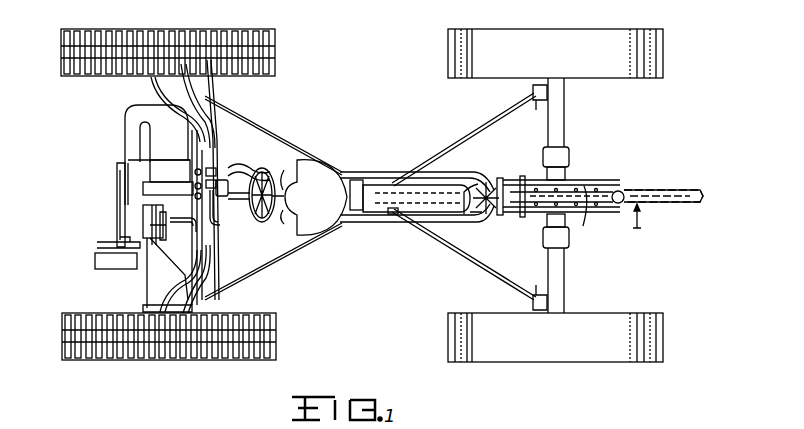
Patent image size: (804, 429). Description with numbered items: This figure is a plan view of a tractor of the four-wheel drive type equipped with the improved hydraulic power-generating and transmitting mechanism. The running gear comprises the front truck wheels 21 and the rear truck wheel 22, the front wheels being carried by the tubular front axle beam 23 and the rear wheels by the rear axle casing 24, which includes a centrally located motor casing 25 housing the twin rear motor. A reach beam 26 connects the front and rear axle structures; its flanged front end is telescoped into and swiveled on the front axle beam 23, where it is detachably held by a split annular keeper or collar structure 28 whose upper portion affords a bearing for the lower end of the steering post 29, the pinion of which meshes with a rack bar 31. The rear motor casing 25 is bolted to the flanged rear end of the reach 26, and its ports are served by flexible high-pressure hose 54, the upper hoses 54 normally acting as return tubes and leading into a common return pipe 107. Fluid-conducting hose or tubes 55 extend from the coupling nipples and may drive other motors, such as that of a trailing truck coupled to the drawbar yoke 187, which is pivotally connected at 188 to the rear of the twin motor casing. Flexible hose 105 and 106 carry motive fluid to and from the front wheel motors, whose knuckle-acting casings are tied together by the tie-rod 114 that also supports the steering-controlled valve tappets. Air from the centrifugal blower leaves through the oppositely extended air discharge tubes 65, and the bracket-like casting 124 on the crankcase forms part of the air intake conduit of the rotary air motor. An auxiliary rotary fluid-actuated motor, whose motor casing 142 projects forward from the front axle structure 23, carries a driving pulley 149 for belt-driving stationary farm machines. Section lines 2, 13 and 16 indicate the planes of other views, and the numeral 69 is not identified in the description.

The front truck wheels 21 is at (118, 19).
The rear truck wheel 22 is at (557, 37).
The rear axle casing 24 is at (565, 125).
The motor casing 25 is at (535, 178).
The reach beam 26 is at (421, 200).
The split annular keeper or collar structure 28 is at (200, 230).
The steering post 29 is at (273, 190).
The rack bar 31 is at (233, 173).
The flexible high-pressure hose 54 is at (502, 213).
The fluid-conducting hose or tubes 55 is at (605, 213).
The air discharge tubes 65 is at (126, 112).
The fuel tank 69 is at (125, 190).
The flexible tubes or hose 105 is at (152, 87).
The flexible pipe tubes or hose 106 is at (200, 88).
The common return pipe 107 is at (311, 165).
The tie-rod 114 is at (200, 292).
The bracket-like casting 124 is at (150, 205).
The motor casing 142 is at (97, 242).
The driving pulley 149 is at (97, 262).
The drawbar yoke 187 is at (705, 190).
The pivotal connection 188 is at (624, 193).
The section line 2- 2 is at (208, 133).
The section line 13- 13 is at (92, 245).
The section line 16- 16 is at (483, 213).
The tubular front axle beam 23 is at (150, 280).